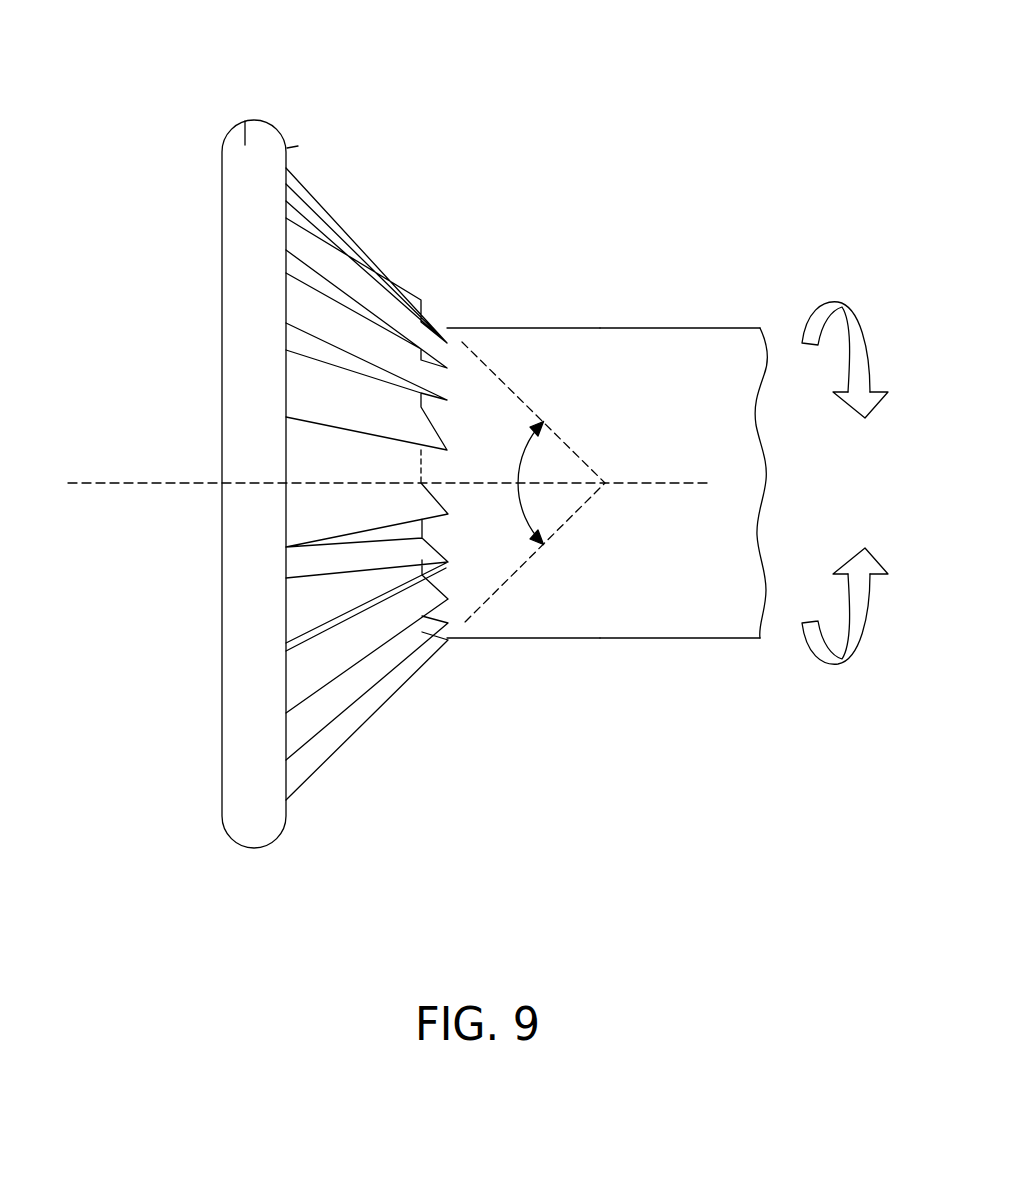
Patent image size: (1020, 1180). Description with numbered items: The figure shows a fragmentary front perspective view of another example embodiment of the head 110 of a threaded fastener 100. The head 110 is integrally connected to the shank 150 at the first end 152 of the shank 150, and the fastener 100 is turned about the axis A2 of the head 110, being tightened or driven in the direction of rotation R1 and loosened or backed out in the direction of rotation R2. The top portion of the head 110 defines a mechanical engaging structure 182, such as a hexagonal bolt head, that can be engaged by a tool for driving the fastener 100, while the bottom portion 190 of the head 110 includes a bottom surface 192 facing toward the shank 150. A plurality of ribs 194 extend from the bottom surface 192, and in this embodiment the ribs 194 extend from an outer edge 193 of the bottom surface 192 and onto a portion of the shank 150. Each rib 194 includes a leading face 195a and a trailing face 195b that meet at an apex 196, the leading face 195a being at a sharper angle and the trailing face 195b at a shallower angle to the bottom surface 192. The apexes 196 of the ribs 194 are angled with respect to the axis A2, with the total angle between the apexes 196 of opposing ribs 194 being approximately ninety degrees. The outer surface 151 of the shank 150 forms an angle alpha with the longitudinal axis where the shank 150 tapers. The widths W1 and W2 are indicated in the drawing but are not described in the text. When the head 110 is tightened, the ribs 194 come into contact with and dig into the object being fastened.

The threaded fastener 100 is at (131, 195).
The head 110 is at (245, 119).
The shank 150 is at (703, 392).
The outer surface 151 is at (700, 593).
The first end 152 is at (526, 433).
The mechanical engaging structure 182 is at (222, 533).
The bottom portion 190 is at (287, 807).
The bottom surface 192 is at (298, 146).
The outer edge 193 is at (277, 123).
The ribs 194 is at (320, 263).
The leading face 195a is at (322, 542).
The trailing face 195b is at (337, 516).
The apex 196 is at (295, 472).
The axis of the head A2 is at (367, 485).
The rotation direction for tightening R1 is at (859, 360).
The rotation direction for loosening R2 is at (859, 606).
The first width W1 is at (549, 506).
The second width W2 is at (458, 464).
The angle alpha is at (538, 483).